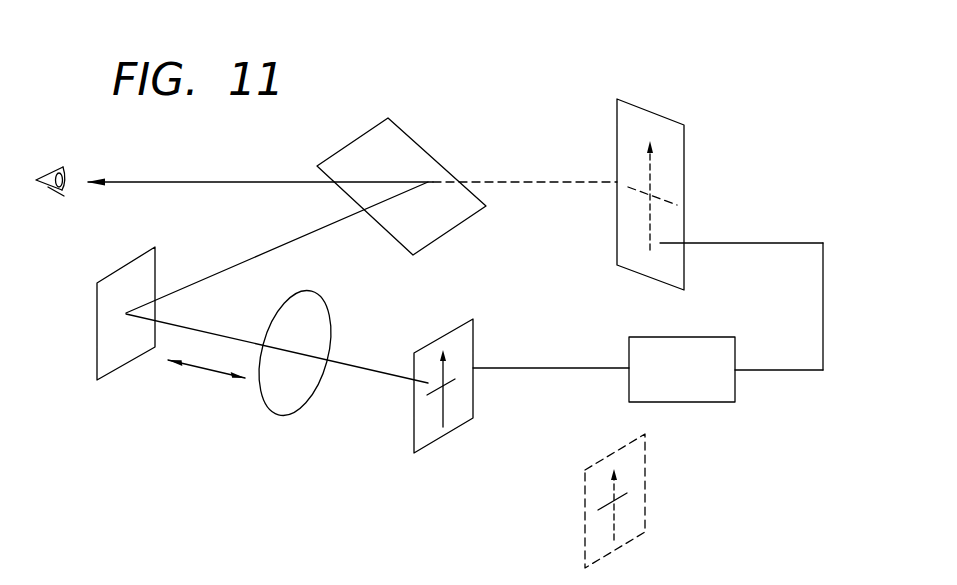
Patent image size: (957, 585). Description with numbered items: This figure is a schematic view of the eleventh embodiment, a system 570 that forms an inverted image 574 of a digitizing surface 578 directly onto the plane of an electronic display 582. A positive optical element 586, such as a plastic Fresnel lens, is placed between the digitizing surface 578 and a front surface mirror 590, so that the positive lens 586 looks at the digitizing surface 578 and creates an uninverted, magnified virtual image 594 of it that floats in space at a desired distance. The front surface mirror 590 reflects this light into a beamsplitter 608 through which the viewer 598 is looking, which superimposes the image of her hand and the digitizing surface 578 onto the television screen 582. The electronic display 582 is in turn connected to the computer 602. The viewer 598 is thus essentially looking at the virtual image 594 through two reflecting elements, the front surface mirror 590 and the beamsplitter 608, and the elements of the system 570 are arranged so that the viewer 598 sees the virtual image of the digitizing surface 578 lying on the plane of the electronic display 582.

The system 570 is at (447, 93).
The inverted image 574 is at (650, 208).
The digitizing surface 578 is at (435, 442).
The electronic display 582 is at (650, 110).
The positive optical element 586 is at (332, 320).
The front surface mirror 590 is at (126, 365).
The virtual image 594 is at (645, 483).
The viewer 598 is at (52, 189).
The computer 602 is at (735, 390).
The beamsplitter 608 is at (447, 232).